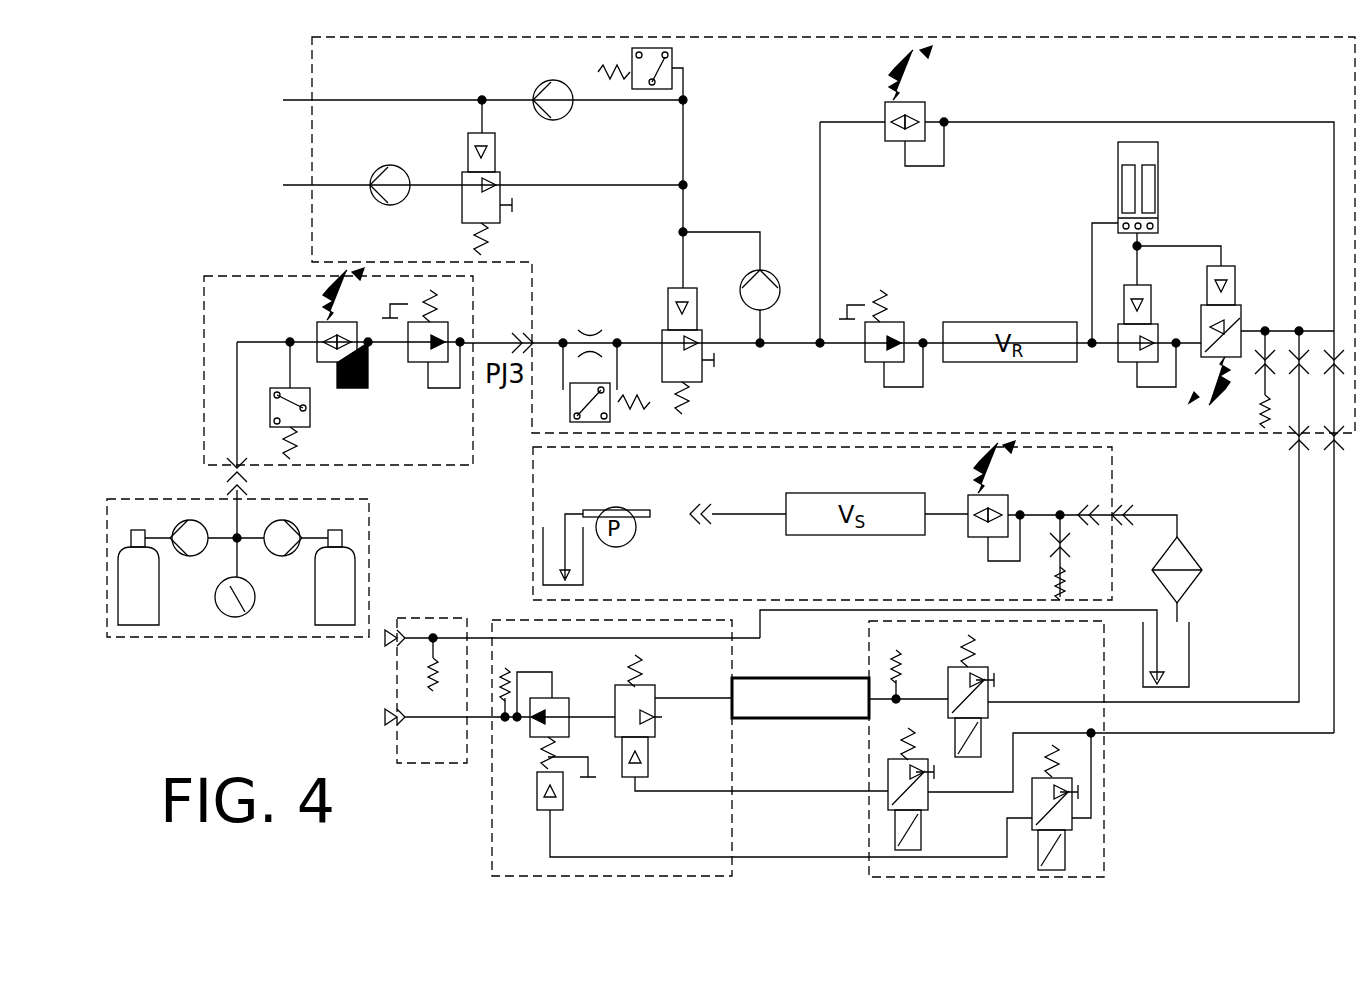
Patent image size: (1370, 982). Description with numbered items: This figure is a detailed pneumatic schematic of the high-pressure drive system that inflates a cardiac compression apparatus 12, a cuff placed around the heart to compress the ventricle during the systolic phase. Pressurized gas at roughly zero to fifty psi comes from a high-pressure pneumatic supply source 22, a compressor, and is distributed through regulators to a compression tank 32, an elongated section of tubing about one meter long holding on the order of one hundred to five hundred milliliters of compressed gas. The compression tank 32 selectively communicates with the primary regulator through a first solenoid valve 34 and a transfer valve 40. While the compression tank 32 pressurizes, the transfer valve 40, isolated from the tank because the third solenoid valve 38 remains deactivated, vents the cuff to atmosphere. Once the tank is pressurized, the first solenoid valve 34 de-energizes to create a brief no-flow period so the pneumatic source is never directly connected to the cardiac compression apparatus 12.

The cardiac compression apparatus 12 is at (397, 672).
The high-pressure pneumatic supply source 22 is at (371, 536).
The compression tank 32 is at (770, 678).
The first solenoid valve 34 is at (988, 668).
The third solenoid valve 38 is at (930, 768).
The transfer valve 40 is at (505, 620).